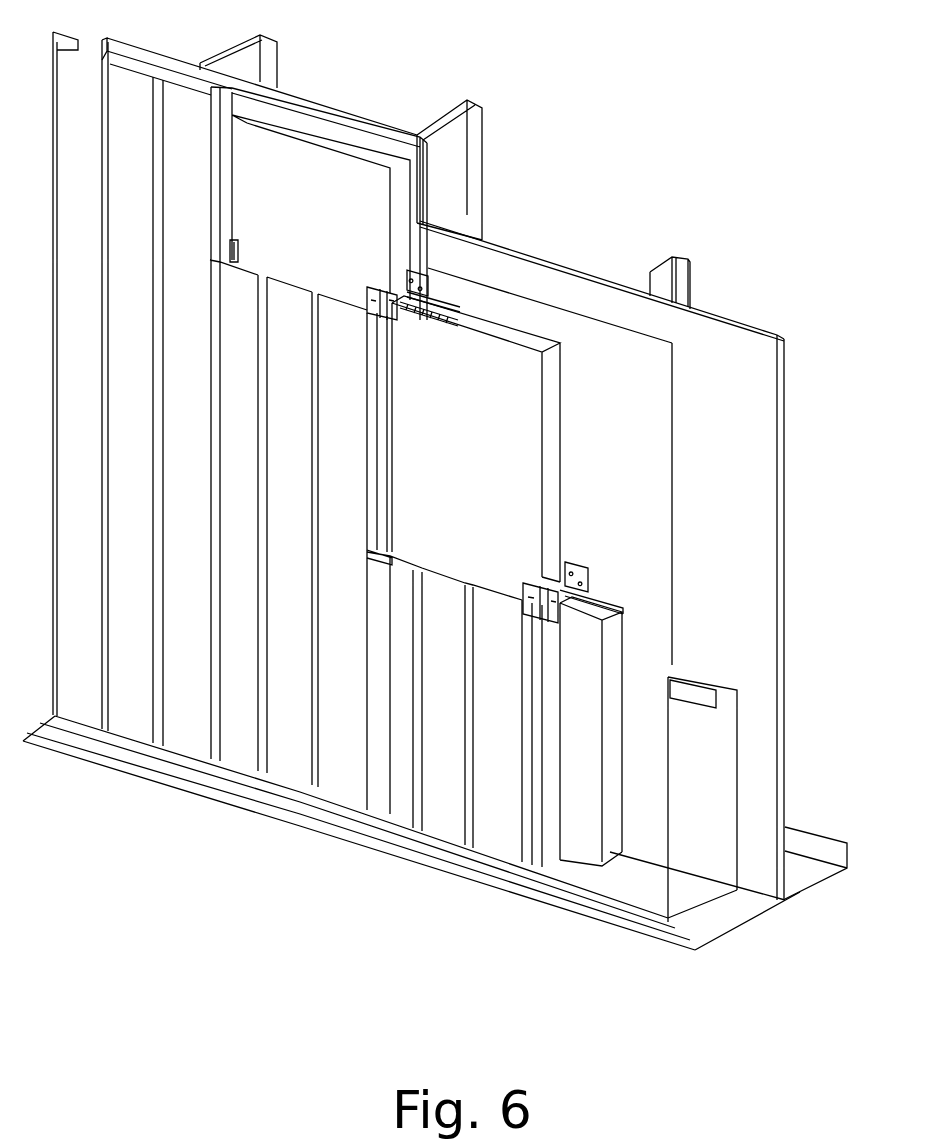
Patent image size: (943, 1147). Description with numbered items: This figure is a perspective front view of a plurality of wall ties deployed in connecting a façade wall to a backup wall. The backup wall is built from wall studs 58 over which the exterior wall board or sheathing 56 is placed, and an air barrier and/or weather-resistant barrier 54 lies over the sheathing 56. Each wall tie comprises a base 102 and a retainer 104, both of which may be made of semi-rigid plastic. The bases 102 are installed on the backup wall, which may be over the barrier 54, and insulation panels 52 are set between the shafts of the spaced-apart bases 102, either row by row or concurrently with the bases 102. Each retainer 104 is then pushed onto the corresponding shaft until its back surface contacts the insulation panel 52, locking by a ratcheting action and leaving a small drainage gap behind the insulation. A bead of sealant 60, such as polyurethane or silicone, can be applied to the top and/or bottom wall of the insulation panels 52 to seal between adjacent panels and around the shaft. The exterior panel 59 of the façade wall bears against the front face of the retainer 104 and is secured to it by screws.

The insulation panel 52 is at (490, 415).
The air barrier and/or weather-resistant barrier 54 is at (632, 546).
The exterior wall board or sheathing 56 is at (734, 478).
The wall stud 58 is at (448, 153).
The exterior panel 59 is at (286, 762).
The bead of sealant 60 is at (458, 318).
The base 102 is at (428, 271).
The retainer 104 is at (368, 291).